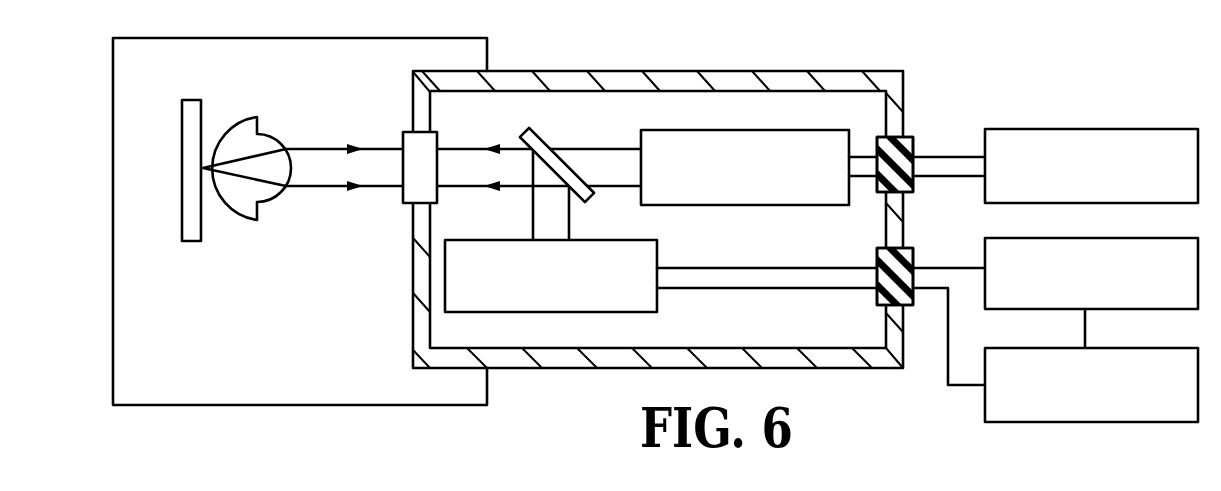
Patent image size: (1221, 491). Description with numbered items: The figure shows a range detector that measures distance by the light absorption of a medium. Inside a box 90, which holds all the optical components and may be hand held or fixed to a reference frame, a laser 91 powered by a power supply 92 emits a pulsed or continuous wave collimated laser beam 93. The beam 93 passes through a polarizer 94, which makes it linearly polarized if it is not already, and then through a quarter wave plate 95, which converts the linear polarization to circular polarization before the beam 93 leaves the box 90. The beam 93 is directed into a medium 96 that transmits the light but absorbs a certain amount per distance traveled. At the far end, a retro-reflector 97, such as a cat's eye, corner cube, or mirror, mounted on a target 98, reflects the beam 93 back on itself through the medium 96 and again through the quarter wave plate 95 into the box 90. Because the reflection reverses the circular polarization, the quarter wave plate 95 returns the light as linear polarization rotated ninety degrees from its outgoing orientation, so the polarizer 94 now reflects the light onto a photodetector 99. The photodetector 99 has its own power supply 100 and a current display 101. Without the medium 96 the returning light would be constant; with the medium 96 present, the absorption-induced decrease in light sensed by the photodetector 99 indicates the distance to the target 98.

The box 90 is at (905, 92).
The laser 91 is at (773, 205).
The power supply 92 is at (1090, 129).
The laser beam 93 is at (330, 168).
The polarizer 94 is at (541, 139).
The quarter wave plate 95 is at (401, 201).
The medium 96 is at (293, 320).
The retro-reflector 97 is at (242, 117).
The target 98 is at (182, 123).
The photodetector 99 is at (667, 249).
The power supply 100 is at (1103, 238).
The current display 101 is at (1117, 348).